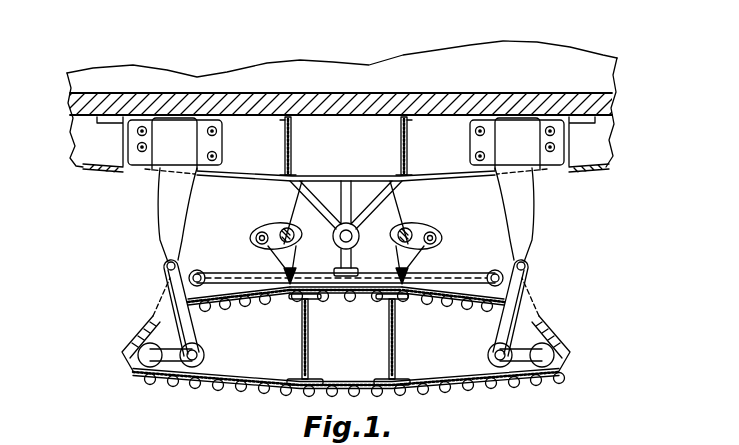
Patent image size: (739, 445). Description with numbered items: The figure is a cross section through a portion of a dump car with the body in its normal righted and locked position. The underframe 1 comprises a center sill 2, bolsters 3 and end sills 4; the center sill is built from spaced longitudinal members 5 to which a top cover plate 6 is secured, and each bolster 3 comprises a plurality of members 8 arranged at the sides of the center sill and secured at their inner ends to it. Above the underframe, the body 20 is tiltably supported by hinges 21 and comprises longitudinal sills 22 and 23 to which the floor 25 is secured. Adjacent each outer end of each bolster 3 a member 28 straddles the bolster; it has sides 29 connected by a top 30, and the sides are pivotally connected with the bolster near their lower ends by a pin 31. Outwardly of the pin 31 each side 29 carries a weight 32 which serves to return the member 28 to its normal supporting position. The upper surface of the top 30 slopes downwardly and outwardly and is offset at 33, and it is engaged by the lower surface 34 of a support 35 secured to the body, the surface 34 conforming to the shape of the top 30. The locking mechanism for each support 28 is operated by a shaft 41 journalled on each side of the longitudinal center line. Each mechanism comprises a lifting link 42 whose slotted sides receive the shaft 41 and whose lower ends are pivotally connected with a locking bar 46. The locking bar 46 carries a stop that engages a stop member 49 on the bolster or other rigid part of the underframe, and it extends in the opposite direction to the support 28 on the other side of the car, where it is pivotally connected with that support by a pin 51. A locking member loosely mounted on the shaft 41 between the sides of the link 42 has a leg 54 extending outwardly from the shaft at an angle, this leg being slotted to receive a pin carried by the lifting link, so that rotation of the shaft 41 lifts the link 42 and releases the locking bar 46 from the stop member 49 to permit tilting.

The underframe 1 is at (253, 368).
The center sill 2 is at (390, 338).
The bolster 3 is at (283, 363).
The end sill 4 is at (363, 386).
The longitudinal member 5 is at (387, 310).
The top cover plate 6 is at (363, 290).
The bolster member 8 is at (346, 323).
The body 20 is at (340, 98).
The hinge 21 is at (346, 228).
The longitudinal sill 22 is at (402, 137).
The longitudinal sill 23 is at (624, 136).
The floor 25 is at (258, 100).
The support member 28 is at (523, 271).
The side 29 is at (513, 293).
The top 30 is at (530, 254).
The pin 31 is at (500, 367).
The weight 32 is at (550, 353).
The offset 33 is at (531, 263).
The lower surface 34 is at (517, 257).
The support 35 is at (522, 219).
The shaft 41 is at (407, 224).
The lifting link 42 is at (423, 255).
The locking bar 46 is at (477, 273).
The stop member 49 is at (437, 294).
The pin 51 is at (493, 291).
The leg 54 is at (416, 236).